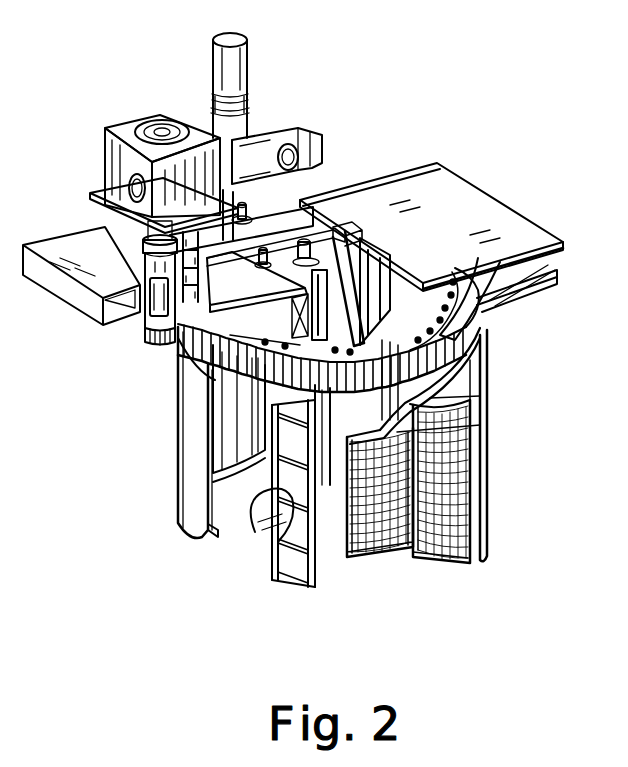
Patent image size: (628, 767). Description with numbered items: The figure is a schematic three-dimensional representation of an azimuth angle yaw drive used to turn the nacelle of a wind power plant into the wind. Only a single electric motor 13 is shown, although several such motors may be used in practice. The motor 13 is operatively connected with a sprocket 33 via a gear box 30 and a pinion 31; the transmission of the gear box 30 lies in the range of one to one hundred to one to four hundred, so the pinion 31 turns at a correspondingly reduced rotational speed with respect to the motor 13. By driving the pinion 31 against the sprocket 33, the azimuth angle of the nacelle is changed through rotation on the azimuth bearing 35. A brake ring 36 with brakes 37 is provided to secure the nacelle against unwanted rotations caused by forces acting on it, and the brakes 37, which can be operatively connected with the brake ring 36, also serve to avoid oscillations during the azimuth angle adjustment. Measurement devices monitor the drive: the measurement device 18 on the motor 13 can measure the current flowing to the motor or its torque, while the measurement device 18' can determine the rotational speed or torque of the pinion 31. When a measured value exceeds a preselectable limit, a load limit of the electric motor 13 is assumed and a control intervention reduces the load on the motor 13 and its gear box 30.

The electric motor 13 is at (250, 68).
The measurement device 18 is at (303, 134).
The measurement device 18' is at (121, 298).
The gear box 30 is at (122, 120).
The pinion 31 is at (165, 345).
The sprocket 33 is at (480, 347).
The azimuth bearing 35 is at (488, 375).
The brake ring 36 is at (430, 393).
The brake 37 is at (417, 410).